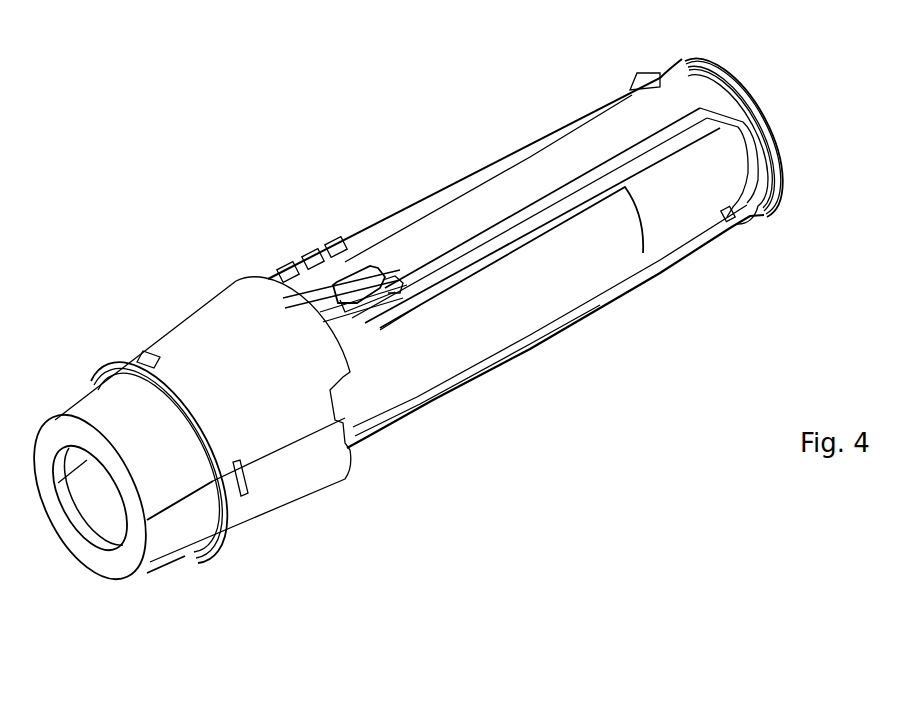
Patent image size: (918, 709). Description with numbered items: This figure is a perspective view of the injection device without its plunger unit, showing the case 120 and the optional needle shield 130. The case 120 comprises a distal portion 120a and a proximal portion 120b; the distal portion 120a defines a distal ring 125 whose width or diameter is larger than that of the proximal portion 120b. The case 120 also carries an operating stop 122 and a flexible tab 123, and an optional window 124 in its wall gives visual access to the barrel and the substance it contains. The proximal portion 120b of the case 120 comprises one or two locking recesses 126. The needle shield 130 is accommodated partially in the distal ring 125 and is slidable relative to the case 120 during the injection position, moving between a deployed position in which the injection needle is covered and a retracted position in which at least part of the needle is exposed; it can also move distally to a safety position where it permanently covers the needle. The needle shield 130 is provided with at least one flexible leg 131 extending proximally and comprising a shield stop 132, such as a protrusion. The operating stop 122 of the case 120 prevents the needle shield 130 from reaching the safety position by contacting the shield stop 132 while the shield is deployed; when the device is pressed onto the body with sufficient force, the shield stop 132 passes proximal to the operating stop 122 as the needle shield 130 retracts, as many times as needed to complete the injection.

The case 120 is at (533, 333).
The distal portion 120a is at (283, 427).
The proximal portion 120b is at (568, 147).
The operating stop 122 is at (354, 300).
The flexible tab 123 is at (333, 320).
The window 124 is at (610, 253).
The distal ring 125 is at (247, 320).
The locking recess 126 is at (743, 165).
The needle shield 130 is at (170, 553).
The flexible leg 131 is at (357, 290).
The shield stop 132 is at (348, 290).